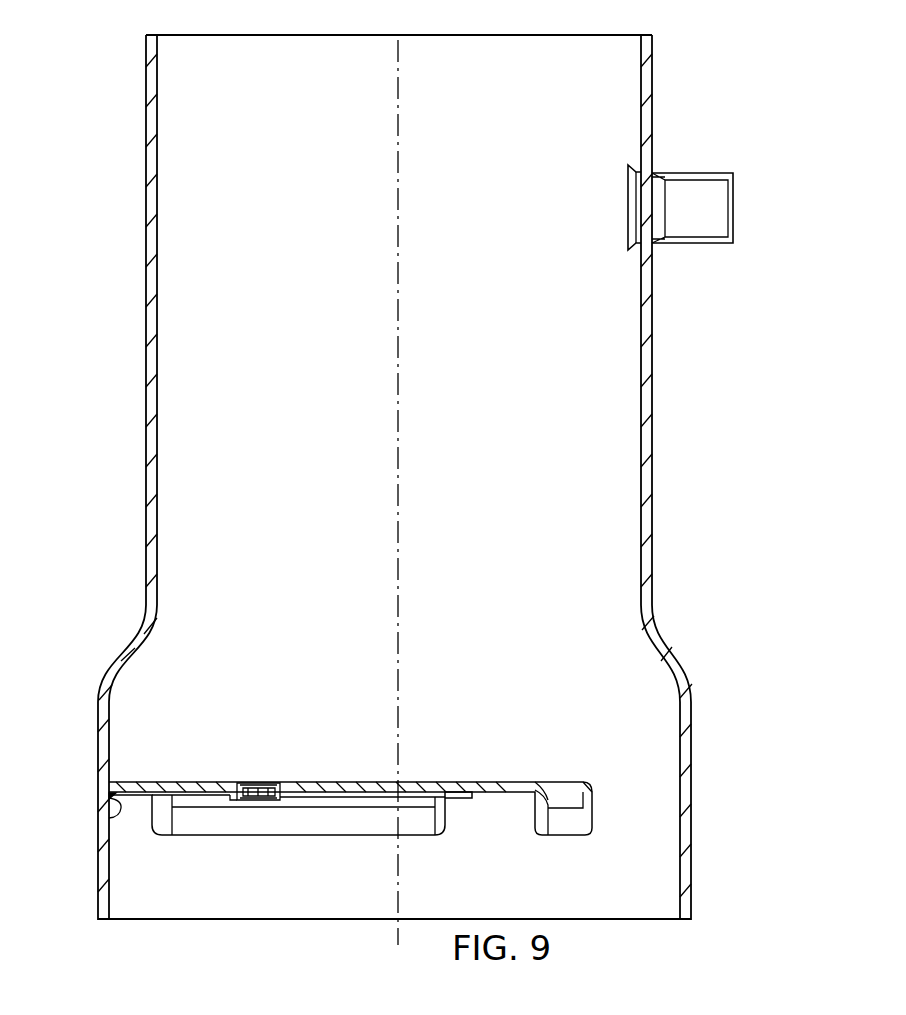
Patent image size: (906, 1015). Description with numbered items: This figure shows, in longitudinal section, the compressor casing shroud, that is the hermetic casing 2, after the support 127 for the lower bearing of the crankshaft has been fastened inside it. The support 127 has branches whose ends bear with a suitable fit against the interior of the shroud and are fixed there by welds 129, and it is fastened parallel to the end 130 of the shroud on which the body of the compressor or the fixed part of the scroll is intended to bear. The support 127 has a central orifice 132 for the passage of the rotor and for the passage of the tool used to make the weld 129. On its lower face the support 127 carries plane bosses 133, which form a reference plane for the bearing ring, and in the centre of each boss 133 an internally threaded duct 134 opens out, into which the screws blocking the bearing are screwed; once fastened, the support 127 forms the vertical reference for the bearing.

The hermetic casing 2 is at (647, 480).
The end of the shroud 130 is at (644, 36).
The support 127 is at (188, 753).
The central orifice 132 is at (484, 790).
The weld 129 is at (106, 817).
The plane boss 133 is at (241, 801).
The internally threaded duct 134 is at (259, 800).